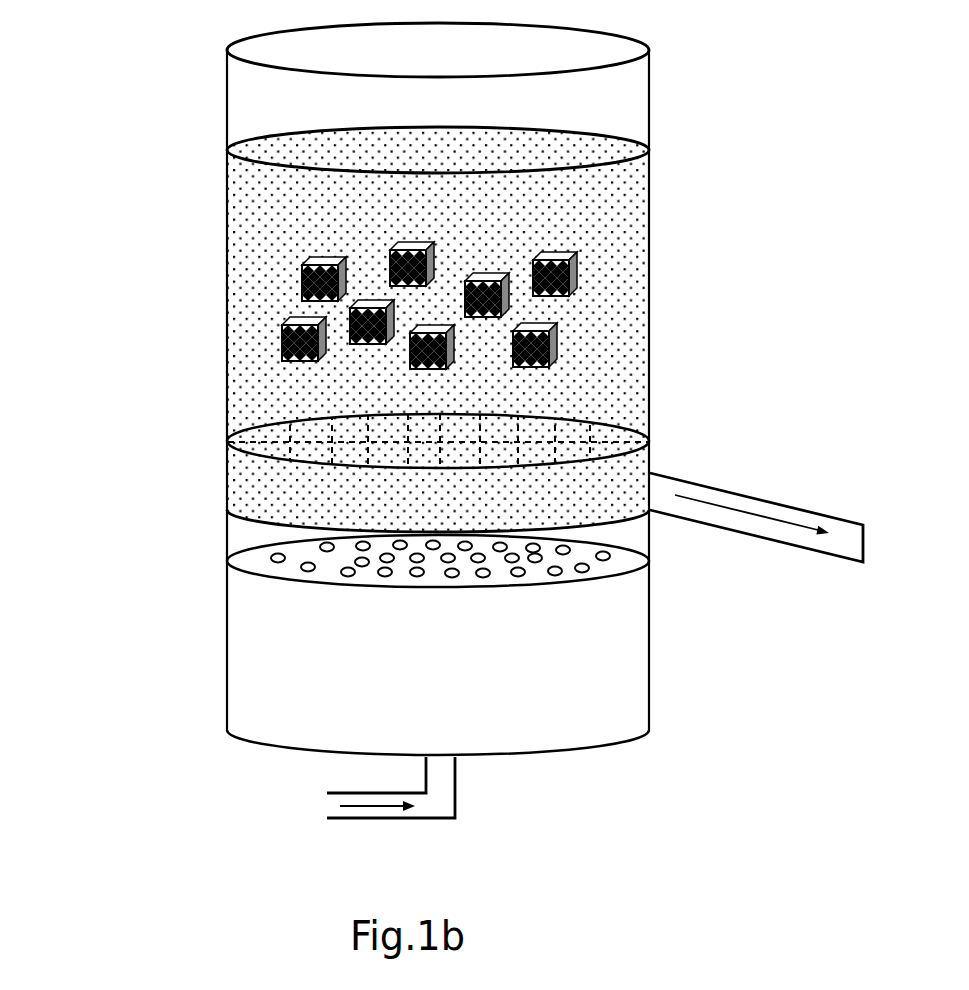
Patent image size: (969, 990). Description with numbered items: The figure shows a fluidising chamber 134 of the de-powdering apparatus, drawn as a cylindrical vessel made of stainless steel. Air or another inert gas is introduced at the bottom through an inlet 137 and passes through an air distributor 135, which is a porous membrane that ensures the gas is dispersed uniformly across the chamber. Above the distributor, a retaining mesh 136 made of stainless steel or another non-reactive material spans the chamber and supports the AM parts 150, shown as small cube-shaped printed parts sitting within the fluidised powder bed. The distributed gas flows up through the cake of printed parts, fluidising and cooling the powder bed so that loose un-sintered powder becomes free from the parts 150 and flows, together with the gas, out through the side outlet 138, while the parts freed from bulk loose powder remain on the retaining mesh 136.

The fluidising chamber 134 is at (203, 238).
The AM parts 150 is at (601, 265).
The retaining mesh 136 is at (608, 438).
The outlet 138 is at (687, 477).
The air distributor 135 is at (250, 558).
The inlet 137 is at (342, 793).